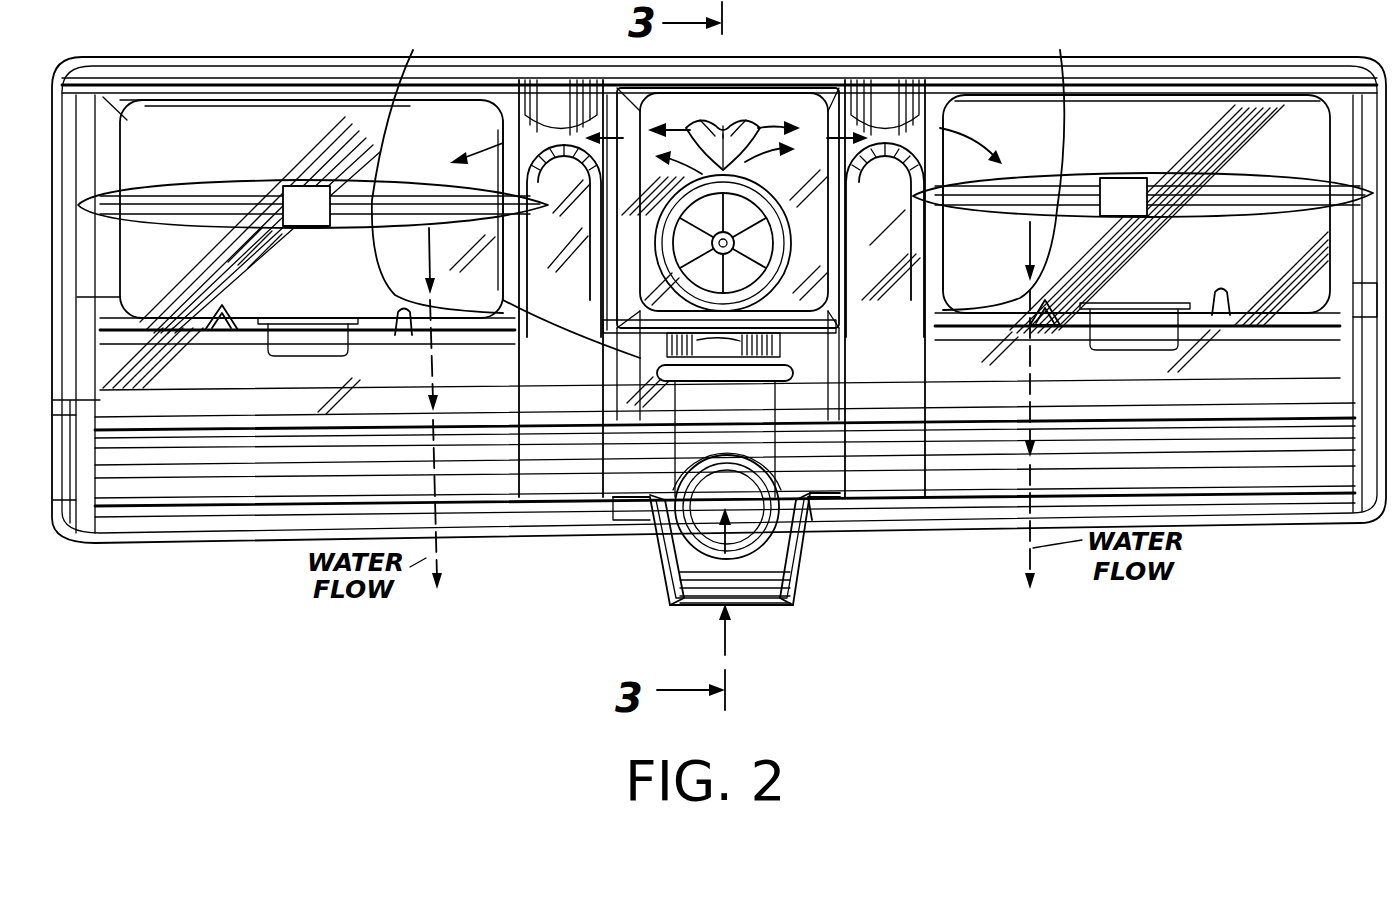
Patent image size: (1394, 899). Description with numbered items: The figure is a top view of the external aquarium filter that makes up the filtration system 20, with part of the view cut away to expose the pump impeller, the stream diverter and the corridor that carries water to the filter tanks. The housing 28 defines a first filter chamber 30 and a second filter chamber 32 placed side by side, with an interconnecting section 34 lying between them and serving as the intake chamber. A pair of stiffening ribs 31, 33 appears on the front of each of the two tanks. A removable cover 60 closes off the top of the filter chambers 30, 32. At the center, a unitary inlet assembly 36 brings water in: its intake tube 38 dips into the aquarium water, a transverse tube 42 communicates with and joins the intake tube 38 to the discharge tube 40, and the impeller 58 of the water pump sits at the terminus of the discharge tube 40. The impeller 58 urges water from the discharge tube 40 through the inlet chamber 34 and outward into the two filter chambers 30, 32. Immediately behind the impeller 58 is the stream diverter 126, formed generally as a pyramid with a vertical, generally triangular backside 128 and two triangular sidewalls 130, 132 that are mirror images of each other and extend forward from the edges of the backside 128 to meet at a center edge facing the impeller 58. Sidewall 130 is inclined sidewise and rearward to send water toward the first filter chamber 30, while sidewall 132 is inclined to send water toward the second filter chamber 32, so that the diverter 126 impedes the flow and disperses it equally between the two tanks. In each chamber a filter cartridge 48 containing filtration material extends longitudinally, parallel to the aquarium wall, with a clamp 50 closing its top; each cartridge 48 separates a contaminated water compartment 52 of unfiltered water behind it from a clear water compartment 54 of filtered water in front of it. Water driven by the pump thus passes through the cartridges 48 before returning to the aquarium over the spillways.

The filtration system 20 is at (238, 553).
The housing 28 is at (466, 33).
The first filter chamber 30 is at (472, 110).
The stiffening rib 31 is at (400, 337).
The second filter chamber 32 is at (1008, 100).
The stiffening rib 33 is at (212, 328).
The interconnecting section 34 is at (835, 88).
The unitary inlet assembly 36 is at (790, 572).
The intake tube 38 is at (683, 527).
The discharge tube 40 is at (658, 182).
The transverse tube 42 is at (810, 497).
The filter cartridge 48 is at (463, 232).
The clamp 50 is at (298, 228).
The contaminated water compartment 52 is at (412, 112).
The clear water compartment 54 is at (505, 258).
The impeller 58 is at (762, 228).
The removable cover 60 is at (410, 135).
The stream diverter 126 is at (712, 120).
The backside 128 is at (730, 120).
The sidewall 130 is at (724, 129).
The sidewall 132 is at (760, 125).